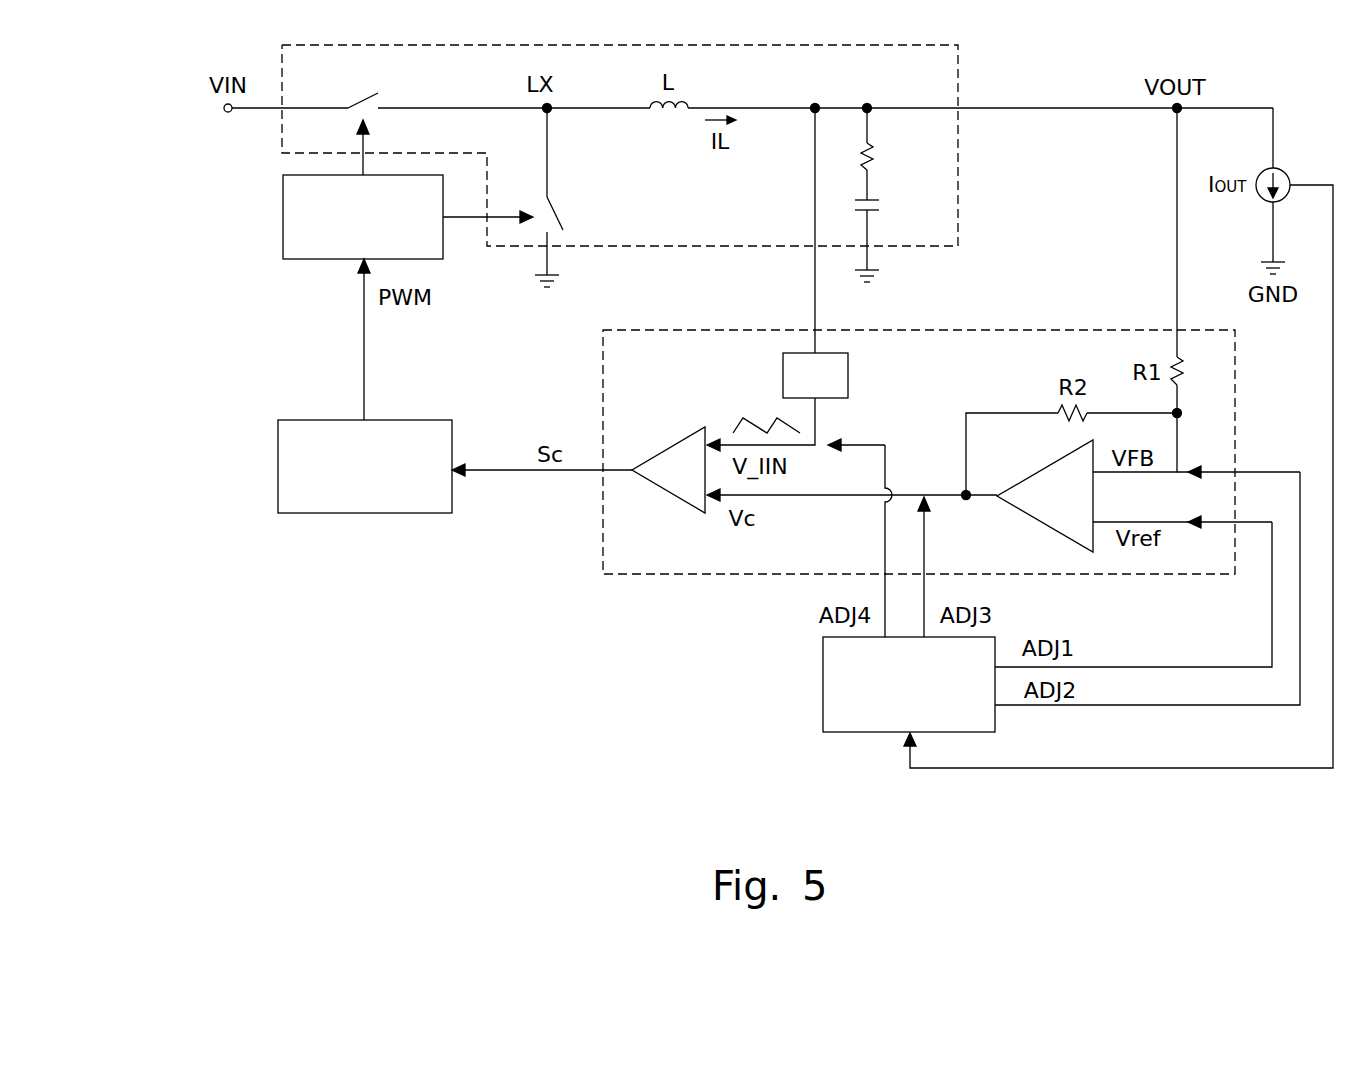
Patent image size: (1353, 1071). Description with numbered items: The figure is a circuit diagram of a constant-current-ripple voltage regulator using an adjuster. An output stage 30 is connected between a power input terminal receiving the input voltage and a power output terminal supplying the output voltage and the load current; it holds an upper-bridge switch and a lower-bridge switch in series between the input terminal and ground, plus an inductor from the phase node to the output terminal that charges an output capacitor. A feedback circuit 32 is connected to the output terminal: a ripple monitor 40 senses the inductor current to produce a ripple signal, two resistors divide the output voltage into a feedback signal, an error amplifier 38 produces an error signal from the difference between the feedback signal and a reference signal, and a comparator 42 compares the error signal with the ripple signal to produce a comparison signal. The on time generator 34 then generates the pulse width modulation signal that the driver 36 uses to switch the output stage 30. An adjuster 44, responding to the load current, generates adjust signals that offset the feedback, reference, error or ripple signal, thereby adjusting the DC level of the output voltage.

The output stage 30 is at (958, 157).
The feedback circuit 32 is at (1020, 330).
The on time generator 34 is at (357, 513).
The driver 36 is at (283, 215).
The error amplifier 38 is at (1040, 523).
The ripple monitor 40 is at (848, 372).
The comparator 42 is at (668, 493).
The adjuster 44 is at (823, 685).